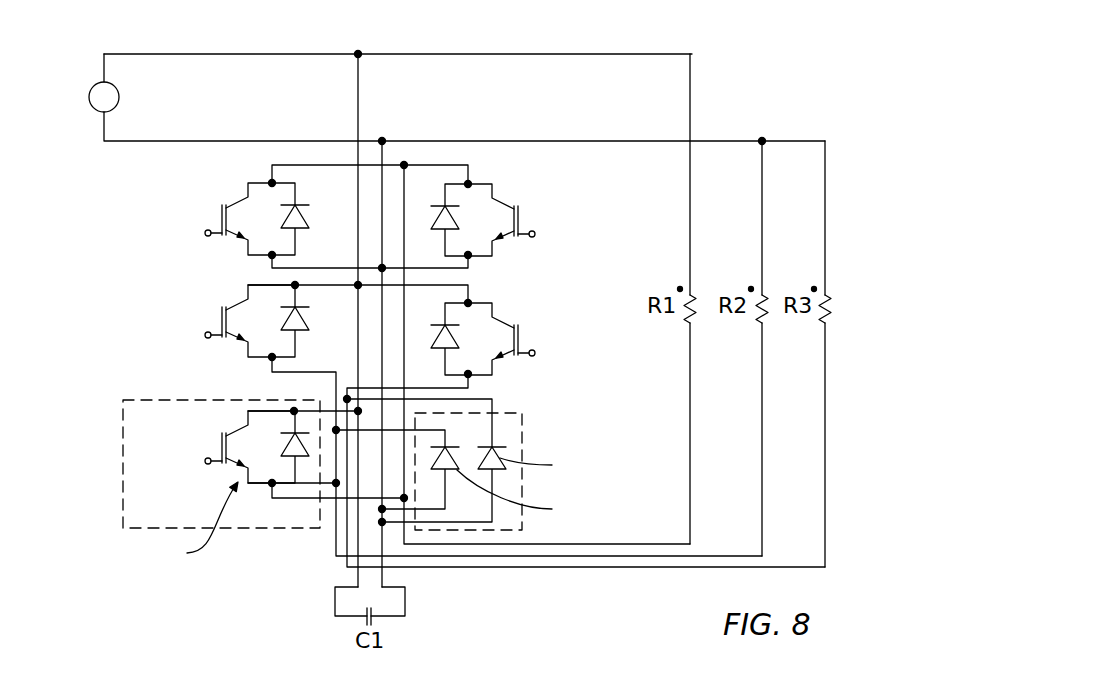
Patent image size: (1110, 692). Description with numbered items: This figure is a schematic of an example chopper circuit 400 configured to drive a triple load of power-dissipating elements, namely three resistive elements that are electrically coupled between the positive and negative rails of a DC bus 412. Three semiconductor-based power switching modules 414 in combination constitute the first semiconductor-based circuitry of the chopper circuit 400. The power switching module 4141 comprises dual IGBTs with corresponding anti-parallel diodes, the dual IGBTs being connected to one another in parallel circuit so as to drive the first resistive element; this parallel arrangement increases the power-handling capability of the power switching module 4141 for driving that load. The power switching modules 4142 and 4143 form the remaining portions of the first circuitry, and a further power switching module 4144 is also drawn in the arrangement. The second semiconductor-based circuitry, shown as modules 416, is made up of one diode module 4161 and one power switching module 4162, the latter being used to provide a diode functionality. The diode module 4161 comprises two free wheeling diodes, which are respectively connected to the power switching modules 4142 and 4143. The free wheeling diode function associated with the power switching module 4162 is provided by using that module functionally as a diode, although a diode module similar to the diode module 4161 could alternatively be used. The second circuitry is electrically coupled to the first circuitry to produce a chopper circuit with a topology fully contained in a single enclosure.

The chopper circuit 400 is at (598, 21).
The DC bus 412 is at (428, 42).
The semiconductor-based power switching modules 414 is at (369, 273).
The power switching module 4141 is at (212, 196).
The power switching module 4142 is at (212, 296).
The power switching module 4143 is at (529, 317).
The fourth IGBT switching unit 4144 is at (529, 197).
The auxiliary switching/diode units 416 is at (328, 478).
The diode module 4161 is at (523, 440).
The power switching module 4162 is at (122, 420).